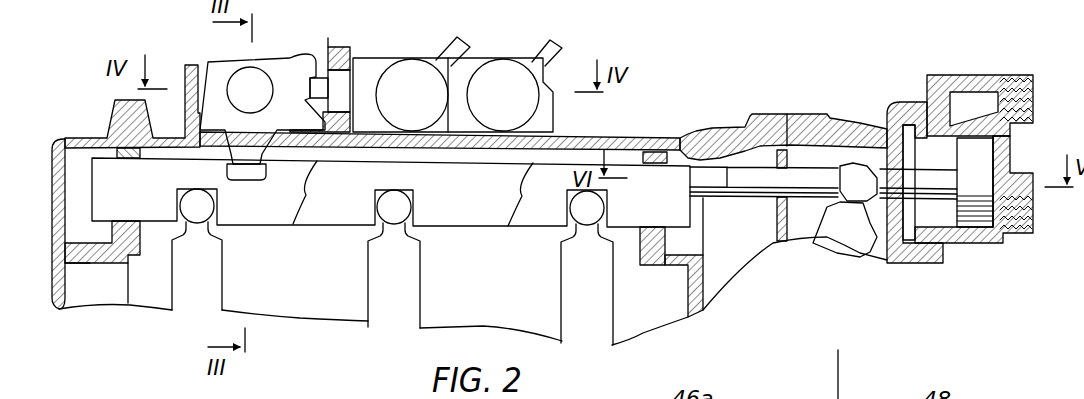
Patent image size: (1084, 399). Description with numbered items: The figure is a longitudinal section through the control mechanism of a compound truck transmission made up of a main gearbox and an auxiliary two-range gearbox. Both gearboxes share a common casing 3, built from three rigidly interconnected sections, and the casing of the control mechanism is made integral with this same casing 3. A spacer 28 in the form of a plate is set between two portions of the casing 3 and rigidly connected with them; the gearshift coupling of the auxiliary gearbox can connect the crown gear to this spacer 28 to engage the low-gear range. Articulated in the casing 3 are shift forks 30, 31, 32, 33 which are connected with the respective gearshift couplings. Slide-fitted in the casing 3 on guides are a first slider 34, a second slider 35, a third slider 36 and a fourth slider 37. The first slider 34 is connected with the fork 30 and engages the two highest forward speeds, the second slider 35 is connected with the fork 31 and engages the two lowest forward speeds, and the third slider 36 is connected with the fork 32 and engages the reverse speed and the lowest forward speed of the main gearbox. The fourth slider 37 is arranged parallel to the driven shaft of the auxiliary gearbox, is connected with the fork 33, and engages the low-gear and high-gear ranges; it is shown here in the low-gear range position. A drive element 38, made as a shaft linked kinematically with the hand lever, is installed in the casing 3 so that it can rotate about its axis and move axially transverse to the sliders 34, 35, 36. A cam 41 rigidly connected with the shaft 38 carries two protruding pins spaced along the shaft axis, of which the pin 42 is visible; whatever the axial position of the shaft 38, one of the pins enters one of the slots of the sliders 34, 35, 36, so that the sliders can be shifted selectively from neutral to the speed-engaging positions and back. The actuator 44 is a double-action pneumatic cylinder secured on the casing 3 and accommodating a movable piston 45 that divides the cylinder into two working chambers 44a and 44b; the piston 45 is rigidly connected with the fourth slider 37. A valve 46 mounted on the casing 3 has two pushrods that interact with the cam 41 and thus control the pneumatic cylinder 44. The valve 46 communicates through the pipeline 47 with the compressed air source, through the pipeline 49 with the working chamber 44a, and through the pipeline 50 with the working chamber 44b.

The casing 3 is at (645, 134).
The spacer 28 is at (777, 222).
The shift fork 30 is at (195, 297).
The shift fork 31 is at (387, 310).
The shift fork 32 is at (570, 292).
The shift fork 33 is at (835, 237).
The first slider 34 is at (237, 212).
The second slider 35 is at (350, 208).
The third slider 36 is at (537, 210).
The fourth slider 37 is at (742, 185).
The drive element 38 is at (240, 78).
The cam 41 is at (288, 72).
The pin 42 is at (248, 170).
The actuator 44 is at (1009, 167).
The working chamber 44a is at (997, 141).
The working chamber 44b is at (930, 148).
The piston 45 is at (977, 227).
The valve 46 is at (376, 65).
The pipeline 47 is at (537, 51).
The pipeline 49 is at (838, 368).
The pipeline 50 is at (449, 46).